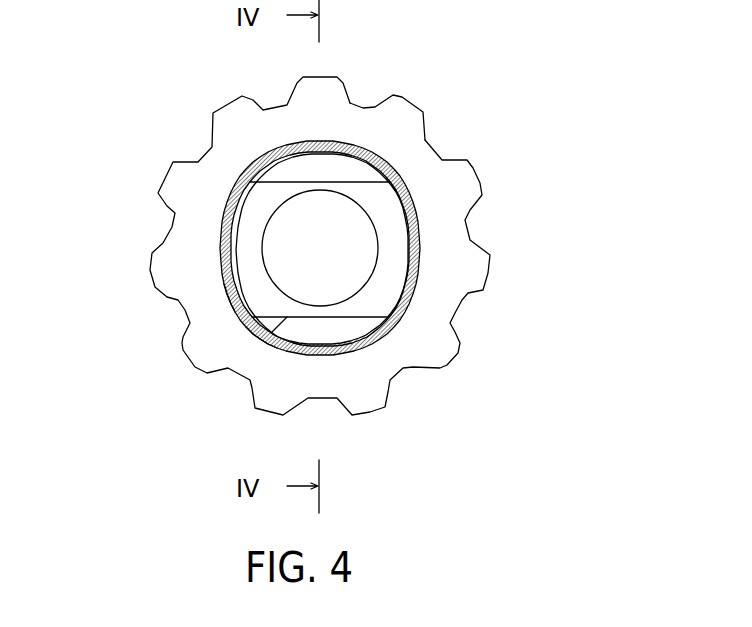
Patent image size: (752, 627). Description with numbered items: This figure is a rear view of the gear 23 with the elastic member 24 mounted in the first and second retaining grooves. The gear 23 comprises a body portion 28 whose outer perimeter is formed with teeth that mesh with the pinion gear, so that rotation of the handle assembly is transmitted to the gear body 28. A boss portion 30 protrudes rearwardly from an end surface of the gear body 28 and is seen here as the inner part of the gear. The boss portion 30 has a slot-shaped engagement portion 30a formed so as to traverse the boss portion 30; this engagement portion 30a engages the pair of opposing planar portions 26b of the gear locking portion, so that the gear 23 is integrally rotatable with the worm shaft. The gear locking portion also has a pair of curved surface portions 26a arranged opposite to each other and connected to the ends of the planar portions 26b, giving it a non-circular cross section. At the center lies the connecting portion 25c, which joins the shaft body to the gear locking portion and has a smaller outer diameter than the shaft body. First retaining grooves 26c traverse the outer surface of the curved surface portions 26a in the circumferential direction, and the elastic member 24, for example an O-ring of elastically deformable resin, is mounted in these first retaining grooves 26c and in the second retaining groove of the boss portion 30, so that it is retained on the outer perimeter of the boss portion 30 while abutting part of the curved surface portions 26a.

The gear 23 is at (329, 216).
The elastic member 24 is at (388, 316).
The body portion 28 is at (357, 122).
The first retaining grooves 26c is at (420, 242).
The curved surface portions 26a is at (230, 305).
The planar portions 26b is at (263, 338).
The boss portion 30 is at (342, 347).
The engagement portion 30a is at (281, 182).
The connecting portion 25c is at (367, 215).